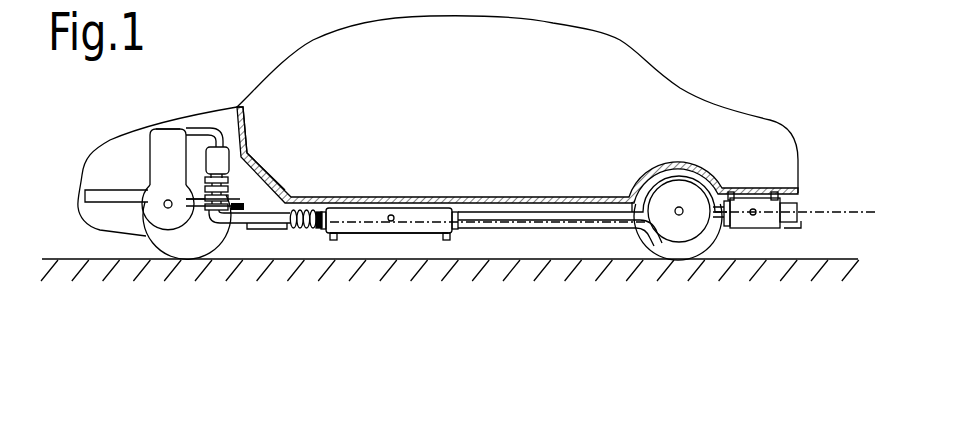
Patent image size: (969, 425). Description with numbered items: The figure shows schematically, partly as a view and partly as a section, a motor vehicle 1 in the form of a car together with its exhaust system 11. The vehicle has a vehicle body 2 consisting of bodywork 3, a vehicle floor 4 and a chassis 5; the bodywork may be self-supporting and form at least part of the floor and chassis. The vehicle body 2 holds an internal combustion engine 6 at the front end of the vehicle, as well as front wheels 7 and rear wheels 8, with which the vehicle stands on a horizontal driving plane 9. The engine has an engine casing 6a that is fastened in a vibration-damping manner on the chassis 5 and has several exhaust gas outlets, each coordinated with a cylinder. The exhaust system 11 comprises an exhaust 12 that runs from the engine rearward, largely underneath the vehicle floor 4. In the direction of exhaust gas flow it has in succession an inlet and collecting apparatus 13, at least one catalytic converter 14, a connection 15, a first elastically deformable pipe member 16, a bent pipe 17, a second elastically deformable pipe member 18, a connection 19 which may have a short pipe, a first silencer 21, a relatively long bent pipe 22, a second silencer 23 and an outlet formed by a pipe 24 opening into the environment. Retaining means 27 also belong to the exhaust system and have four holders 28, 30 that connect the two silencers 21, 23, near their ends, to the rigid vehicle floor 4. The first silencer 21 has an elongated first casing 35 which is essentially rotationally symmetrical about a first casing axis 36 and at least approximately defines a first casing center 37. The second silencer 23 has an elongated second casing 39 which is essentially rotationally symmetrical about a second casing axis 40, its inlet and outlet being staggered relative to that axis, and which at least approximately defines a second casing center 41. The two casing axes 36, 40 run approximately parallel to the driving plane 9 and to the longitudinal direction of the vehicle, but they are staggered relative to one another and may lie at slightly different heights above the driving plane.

The motor vehicle 1 is at (93, 142).
The vehicle body 2 is at (74, 168).
The bodywork 3 is at (690, 90).
The vehicle floor 4 is at (575, 197).
The chassis 5 is at (85, 197).
The internal combustion engine 6 is at (150, 152).
The engine casing 6a is at (170, 138).
The front wheels 7 is at (170, 246).
The rear wheels 8 is at (657, 246).
The driving plane 9 is at (69, 258).
The exhaust system 11 is at (228, 122).
The exhaust 12 is at (205, 233).
The inlet and collecting apparatus 13 is at (202, 126).
The catalytic converter 14 is at (226, 157).
The connection 15 is at (229, 180).
The first elastically deformable pipe member 16 is at (229, 192).
The bent pipe 17 is at (260, 226).
The second elastically deformable pipe member 18 is at (300, 229).
The connection 19 is at (319, 229).
The first silencer 21 is at (337, 208).
The bent pipe 22 is at (543, 221).
The second silencer 23 is at (731, 232).
The pipe 24 is at (794, 226).
The retaining means 27 is at (336, 240).
The holder 28 is at (444, 240).
The holder 30 is at (767, 192).
The first casing 35 is at (405, 234).
The first casing axis 36 is at (366, 212).
The first casing center 37 is at (394, 216).
The second casing 39 is at (748, 230).
The second casing axis 40 is at (812, 215).
The second casing center 41 is at (756, 216).